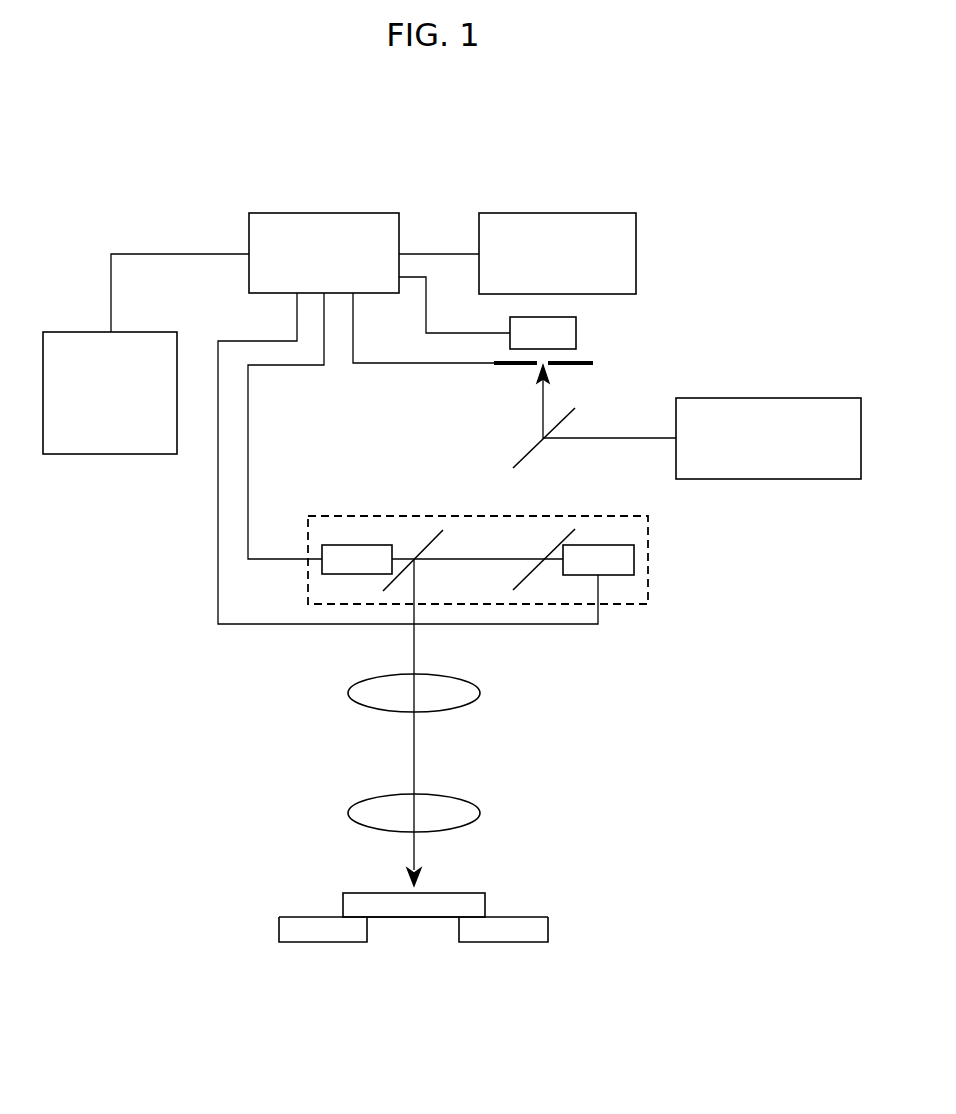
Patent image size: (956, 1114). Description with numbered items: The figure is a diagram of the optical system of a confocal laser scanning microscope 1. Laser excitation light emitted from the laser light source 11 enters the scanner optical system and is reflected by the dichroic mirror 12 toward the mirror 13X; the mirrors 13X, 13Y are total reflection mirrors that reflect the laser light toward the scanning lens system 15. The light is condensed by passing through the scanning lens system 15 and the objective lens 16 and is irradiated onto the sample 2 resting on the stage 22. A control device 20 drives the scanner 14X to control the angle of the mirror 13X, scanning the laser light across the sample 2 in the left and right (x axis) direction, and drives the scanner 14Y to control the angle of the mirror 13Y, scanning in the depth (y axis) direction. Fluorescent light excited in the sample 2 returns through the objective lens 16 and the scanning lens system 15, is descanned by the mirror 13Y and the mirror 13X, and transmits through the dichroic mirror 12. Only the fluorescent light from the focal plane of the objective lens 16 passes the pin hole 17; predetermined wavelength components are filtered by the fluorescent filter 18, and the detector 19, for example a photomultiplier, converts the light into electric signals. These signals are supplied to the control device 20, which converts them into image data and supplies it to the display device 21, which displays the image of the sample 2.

The confocal laser scanning microscope 1 is at (744, 192).
The sample 2 is at (485, 906).
The laser light source 11 is at (773, 398).
The dichroic mirror 12 is at (568, 414).
The mirror 13X is at (565, 530).
The mirror 13Y is at (428, 530).
The scanner 14X is at (634, 560).
The scanner 14Y is at (358, 545).
The scanning lens system 15 is at (480, 693).
The objective lens 16 is at (480, 813).
The pin hole 17 is at (582, 362).
The fluorescent filter 18 is at (576, 333).
The detector 19 is at (561, 213).
The control device 20 is at (328, 213).
The display device 21 is at (110, 454).
The stage 22 is at (548, 930).